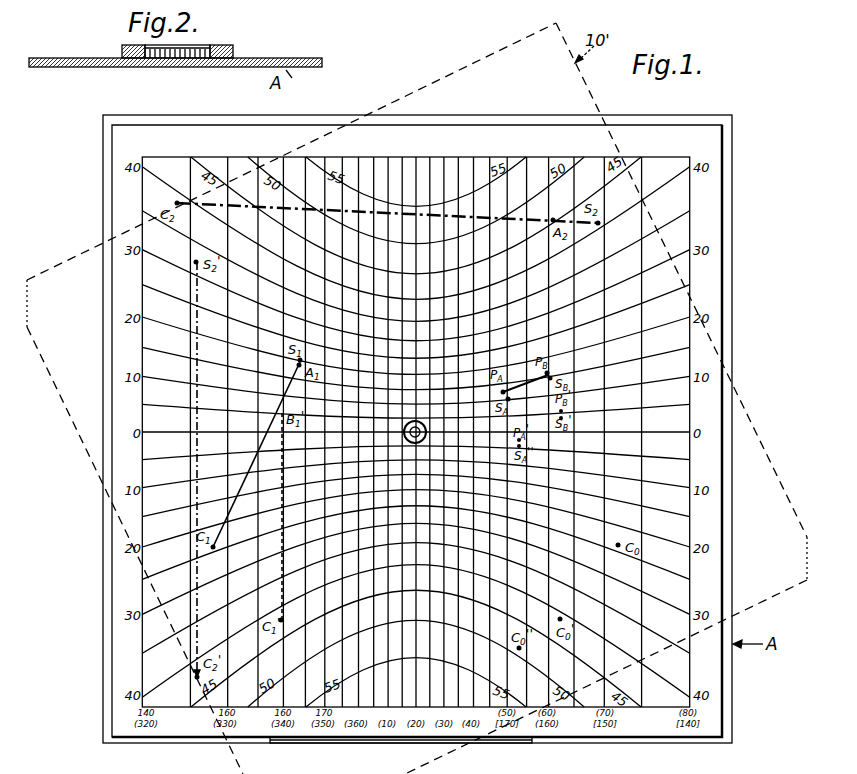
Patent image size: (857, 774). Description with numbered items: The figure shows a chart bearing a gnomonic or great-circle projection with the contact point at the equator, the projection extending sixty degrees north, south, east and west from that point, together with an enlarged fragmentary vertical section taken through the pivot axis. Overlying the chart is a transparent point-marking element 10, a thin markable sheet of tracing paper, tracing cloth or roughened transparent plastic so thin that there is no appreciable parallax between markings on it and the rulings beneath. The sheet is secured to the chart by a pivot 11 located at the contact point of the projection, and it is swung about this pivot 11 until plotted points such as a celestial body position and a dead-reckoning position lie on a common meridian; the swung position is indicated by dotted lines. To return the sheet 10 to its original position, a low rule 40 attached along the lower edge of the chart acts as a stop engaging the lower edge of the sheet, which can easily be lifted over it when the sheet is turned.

In FIG. 2, the point-marking element 10 is at (277, 58).
In FIG. 1, the point-marking element 10 is at (722, 205).
In FIG. 2, the pivot 11 is at (213, 45).
In FIG. 1, the pivot 11 is at (424, 430).
In FIG. 1, the low rule 40 is at (367, 743).